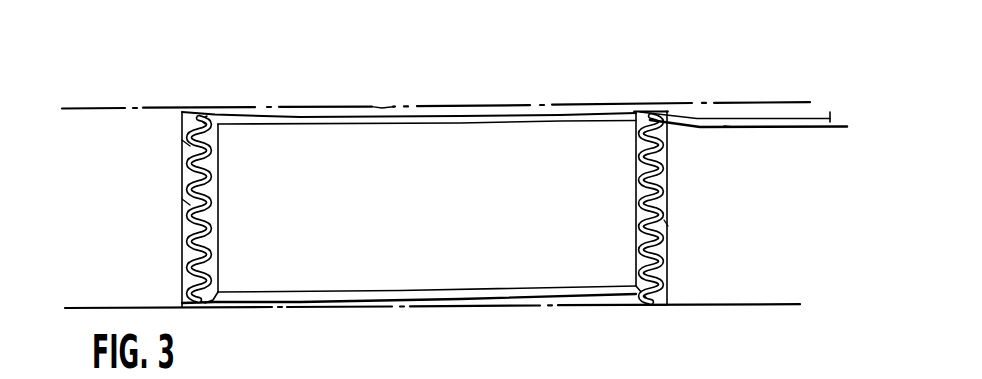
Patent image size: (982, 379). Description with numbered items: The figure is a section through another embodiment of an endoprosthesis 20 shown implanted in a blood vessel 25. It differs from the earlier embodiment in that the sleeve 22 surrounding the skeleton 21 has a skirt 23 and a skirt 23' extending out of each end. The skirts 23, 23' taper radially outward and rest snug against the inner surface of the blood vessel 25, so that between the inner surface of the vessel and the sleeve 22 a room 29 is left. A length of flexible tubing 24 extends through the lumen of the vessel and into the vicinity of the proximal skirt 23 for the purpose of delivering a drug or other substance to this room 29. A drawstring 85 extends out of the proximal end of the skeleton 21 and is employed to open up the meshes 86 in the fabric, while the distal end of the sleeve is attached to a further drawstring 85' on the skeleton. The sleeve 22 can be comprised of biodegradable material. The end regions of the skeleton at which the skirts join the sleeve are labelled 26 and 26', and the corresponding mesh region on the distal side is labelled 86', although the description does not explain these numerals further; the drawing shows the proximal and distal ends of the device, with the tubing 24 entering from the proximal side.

The endoprosthesis 20 is at (668, 262).
The skeleton 21 is at (362, 125).
The sleeve 22 is at (498, 115).
The skirt 23 is at (693, 208).
The skirt 23' is at (158, 209).
The flexible tubing 24 is at (818, 129).
The blood vessel 25 is at (752, 103).
The end flange (right) 26 is at (651, 171).
The end flange (left) 26' is at (200, 178).
The room 29 is at (386, 109).
The drawstring 85 is at (719, 148).
The drawstring 85' is at (150, 161).
The meshes 86 is at (696, 224).
The weld seam 86' is at (149, 206).